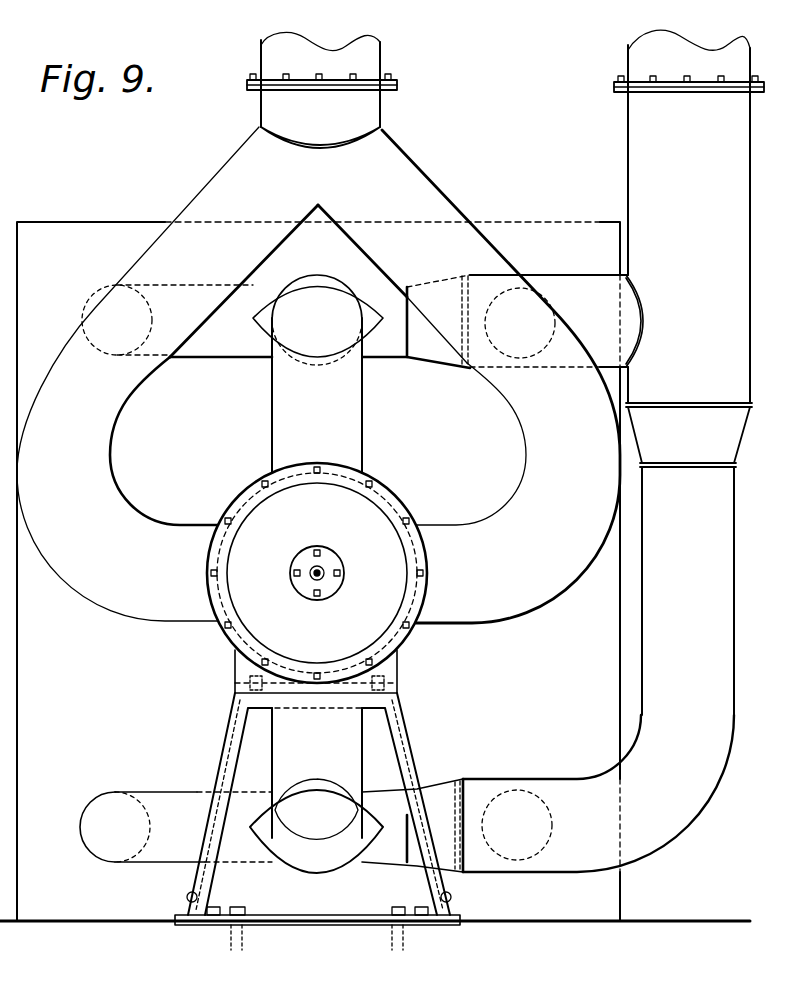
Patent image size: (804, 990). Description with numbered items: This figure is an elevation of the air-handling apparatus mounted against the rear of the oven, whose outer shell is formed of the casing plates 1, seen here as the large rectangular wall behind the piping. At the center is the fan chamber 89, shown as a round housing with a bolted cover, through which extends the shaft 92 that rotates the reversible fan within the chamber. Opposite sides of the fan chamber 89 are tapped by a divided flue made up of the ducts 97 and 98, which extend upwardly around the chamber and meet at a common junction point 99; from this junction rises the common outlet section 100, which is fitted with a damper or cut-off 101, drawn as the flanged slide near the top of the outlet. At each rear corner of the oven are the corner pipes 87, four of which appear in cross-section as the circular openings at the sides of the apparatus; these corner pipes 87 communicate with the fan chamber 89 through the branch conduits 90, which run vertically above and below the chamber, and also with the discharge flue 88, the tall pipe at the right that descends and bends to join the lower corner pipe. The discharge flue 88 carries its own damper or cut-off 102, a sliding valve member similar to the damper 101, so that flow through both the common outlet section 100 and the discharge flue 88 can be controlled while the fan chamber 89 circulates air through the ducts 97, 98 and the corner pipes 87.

The casing plates 1 is at (96, 683).
The corner pipes 87 is at (92, 298).
The discharge flue 88 is at (607, 451).
The fan chamber 89 is at (317, 706).
The branch conduits 90 is at (350, 425).
The shaft 92 is at (320, 567).
The duct 97 is at (214, 385).
The duct 98 is at (422, 379).
The common junction point 99 is at (327, 173).
The common outlet section 100 is at (360, 110).
The damper or cut-off 101 is at (362, 78).
The damper or cut-off 102 is at (645, 80).